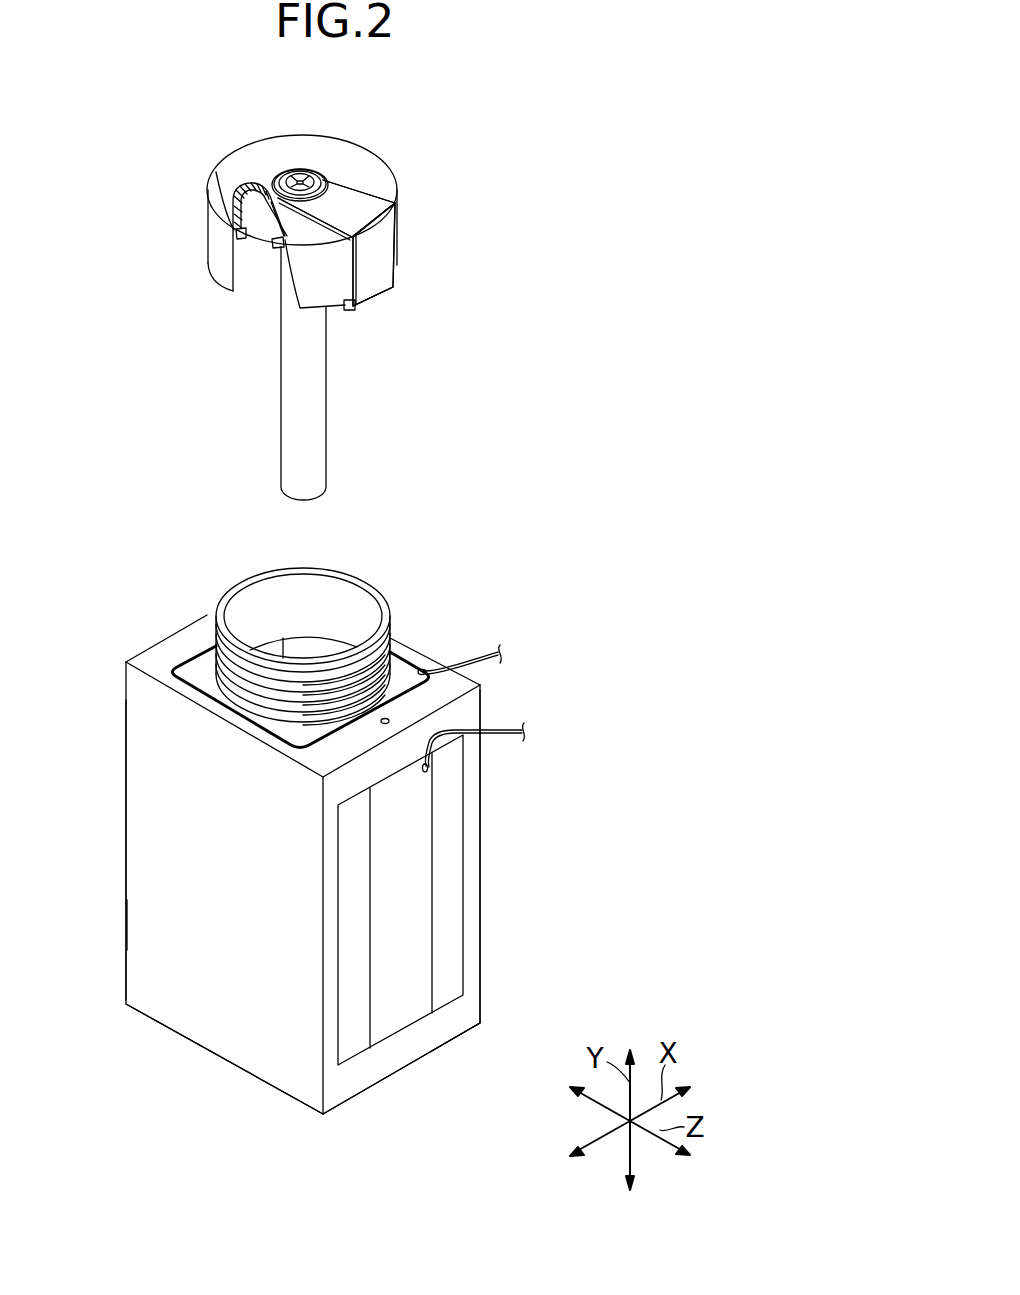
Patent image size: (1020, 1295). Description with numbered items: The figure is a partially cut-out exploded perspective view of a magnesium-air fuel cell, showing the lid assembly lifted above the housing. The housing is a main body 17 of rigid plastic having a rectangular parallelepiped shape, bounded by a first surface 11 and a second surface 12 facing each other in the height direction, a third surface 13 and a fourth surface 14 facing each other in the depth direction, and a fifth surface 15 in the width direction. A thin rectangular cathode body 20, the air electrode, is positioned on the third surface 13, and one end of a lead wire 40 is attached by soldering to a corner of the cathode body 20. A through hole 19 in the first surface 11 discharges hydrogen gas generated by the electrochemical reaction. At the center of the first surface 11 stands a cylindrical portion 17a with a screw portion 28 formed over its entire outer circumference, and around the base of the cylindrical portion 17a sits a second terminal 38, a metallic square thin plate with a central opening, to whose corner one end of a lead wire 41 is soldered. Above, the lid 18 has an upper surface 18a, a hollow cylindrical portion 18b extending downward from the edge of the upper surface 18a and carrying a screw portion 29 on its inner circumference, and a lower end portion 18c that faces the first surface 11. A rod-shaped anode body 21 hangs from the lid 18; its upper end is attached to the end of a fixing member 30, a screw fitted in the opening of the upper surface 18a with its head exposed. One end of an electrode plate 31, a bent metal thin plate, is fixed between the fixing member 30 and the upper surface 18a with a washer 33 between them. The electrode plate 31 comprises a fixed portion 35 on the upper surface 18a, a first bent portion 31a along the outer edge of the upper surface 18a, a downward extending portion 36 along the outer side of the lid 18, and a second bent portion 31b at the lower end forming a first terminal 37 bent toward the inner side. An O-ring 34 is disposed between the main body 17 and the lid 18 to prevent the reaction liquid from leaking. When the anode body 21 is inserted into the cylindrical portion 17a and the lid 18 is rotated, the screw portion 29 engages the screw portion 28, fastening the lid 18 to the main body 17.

The first surface 11 is at (158, 652).
The second surface 12 is at (246, 1032).
The third surface 13 is at (466, 1003).
The fourth surface 14 is at (160, 913).
The fifth surface 15 is at (155, 813).
The main body 17 is at (194, 1006).
The cylindrical portion 17a is at (348, 610).
The lid 18 is at (326, 152).
The upper surface 18a is at (225, 181).
The hollow cylindrical portion 18b is at (218, 233).
The lower end portion 18c is at (224, 286).
The through hole 19 is at (389, 718).
The cathode body 20 is at (410, 920).
The anode body 21 is at (297, 381).
The screw portion 28 is at (386, 667).
The screw portion 29 is at (240, 236).
The fixing member 30 is at (292, 171).
The electrode plate 31 is at (367, 198).
The first bent portion 31a is at (361, 230).
The second bent portion 31b is at (378, 297).
The washer 33 is at (279, 172).
The O-ring 34 is at (278, 250).
The fixed portion 35 is at (343, 203).
The downward extending portion 36 is at (378, 253).
The first terminal 37 is at (345, 311).
The second terminal 38 is at (195, 661).
The lead wire 40 is at (522, 735).
The lead wire 41 is at (484, 651).